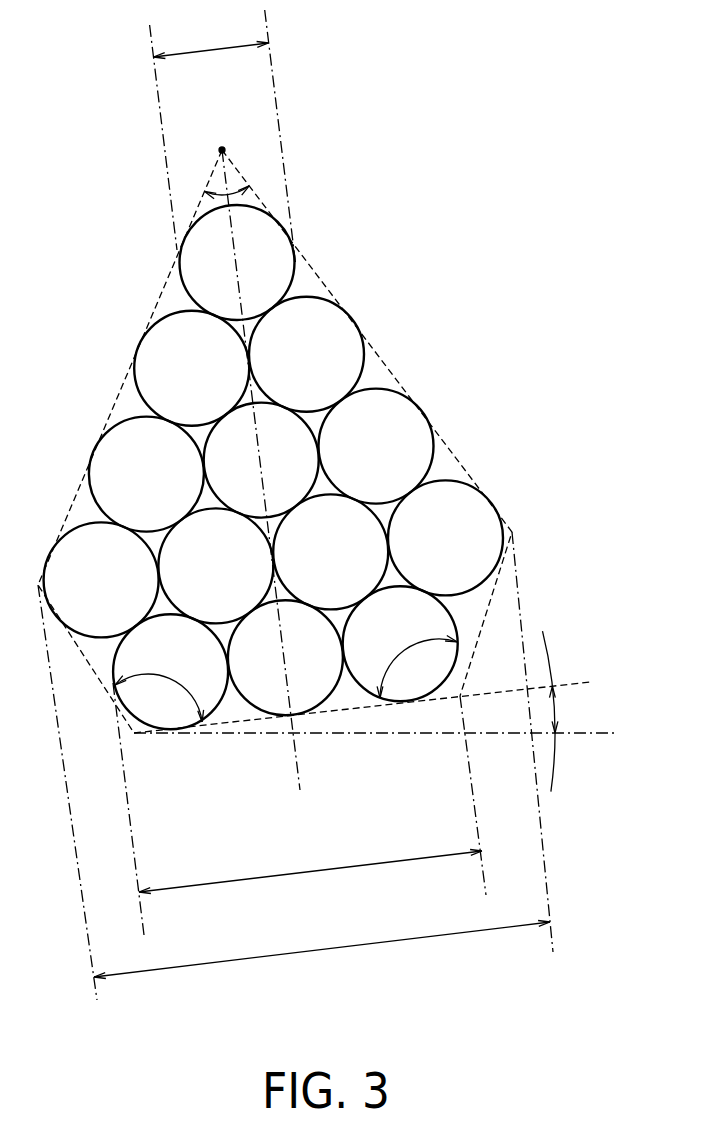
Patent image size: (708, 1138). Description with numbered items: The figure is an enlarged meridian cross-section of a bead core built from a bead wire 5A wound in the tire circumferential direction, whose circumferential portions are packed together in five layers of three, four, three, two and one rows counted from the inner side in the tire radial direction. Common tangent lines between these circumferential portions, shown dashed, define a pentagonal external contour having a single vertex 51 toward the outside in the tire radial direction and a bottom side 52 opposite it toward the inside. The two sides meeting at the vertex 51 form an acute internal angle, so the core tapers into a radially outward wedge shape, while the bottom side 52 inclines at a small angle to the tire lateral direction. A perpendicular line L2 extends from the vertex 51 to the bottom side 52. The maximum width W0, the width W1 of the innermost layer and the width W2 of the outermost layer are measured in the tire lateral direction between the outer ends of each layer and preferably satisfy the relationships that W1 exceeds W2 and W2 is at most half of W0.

The bead wire 5A is at (375, 447).
The vertex 51 is at (222, 150).
The bottom side 52 is at (237, 724).
The perpendicular line L2 is at (298, 768).
The maximum width W0 is at (322, 950).
The width of the innermost layer W1 is at (310, 869).
The width of the outermost layer W2 is at (211, 42).